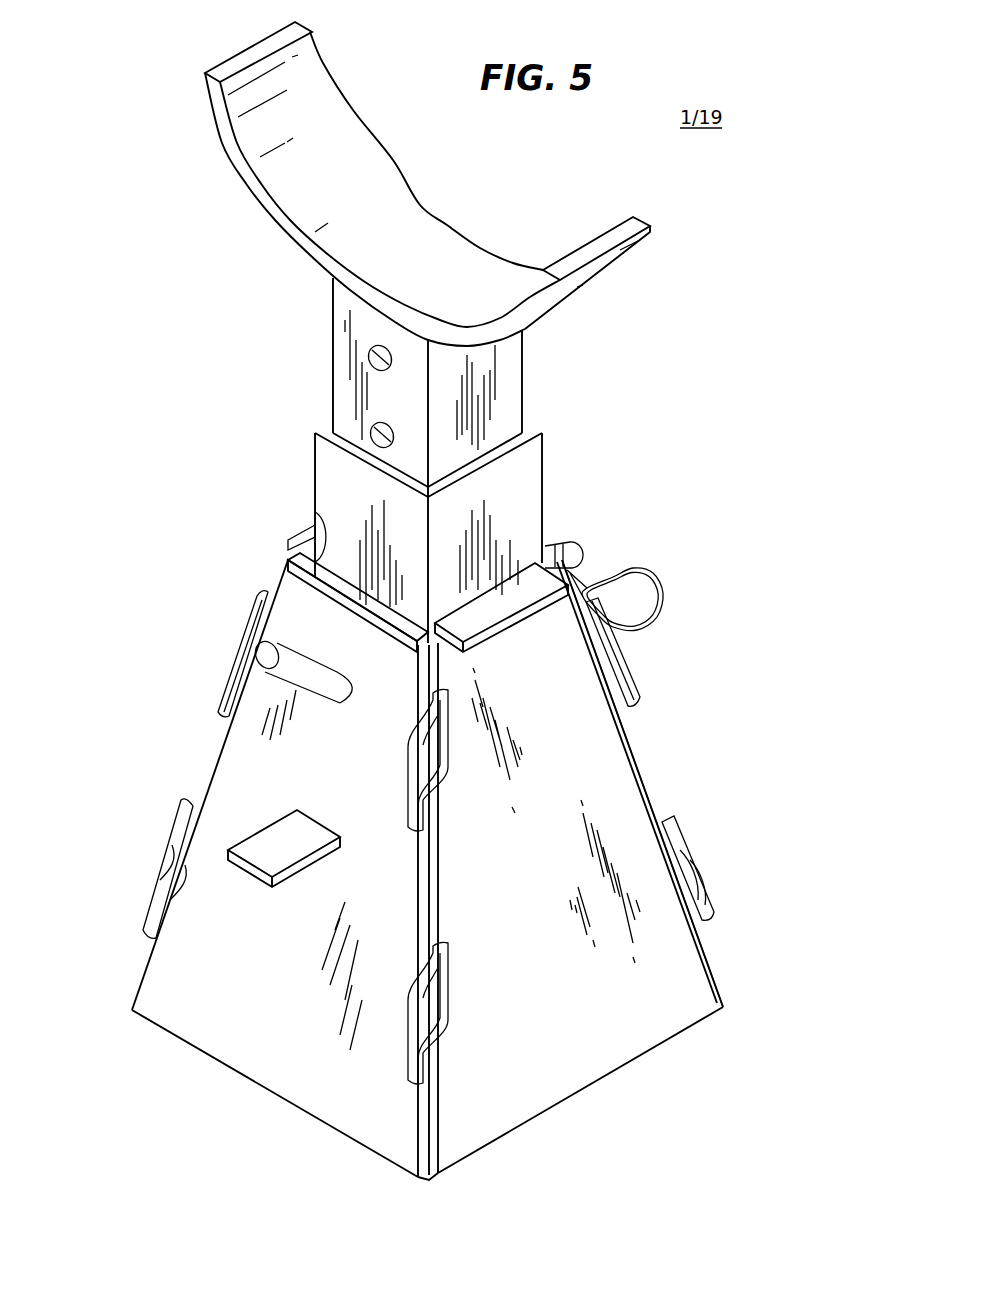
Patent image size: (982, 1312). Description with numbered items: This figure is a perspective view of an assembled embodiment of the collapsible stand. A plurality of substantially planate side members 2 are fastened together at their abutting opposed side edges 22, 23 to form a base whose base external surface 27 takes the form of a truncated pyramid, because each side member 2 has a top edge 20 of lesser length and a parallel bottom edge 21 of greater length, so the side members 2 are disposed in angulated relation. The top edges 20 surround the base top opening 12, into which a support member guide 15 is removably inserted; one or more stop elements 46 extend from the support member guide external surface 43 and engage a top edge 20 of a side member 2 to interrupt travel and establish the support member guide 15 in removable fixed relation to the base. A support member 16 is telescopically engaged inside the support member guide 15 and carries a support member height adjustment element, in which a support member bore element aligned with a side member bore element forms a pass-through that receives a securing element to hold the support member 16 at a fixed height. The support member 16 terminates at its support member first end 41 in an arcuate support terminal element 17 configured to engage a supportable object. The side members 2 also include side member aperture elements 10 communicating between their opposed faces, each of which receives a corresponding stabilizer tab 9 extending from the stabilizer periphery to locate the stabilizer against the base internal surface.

The side member 2 is at (432, 879).
The stabilizer tab 9 is at (287, 819).
The side member aperture element 10 is at (317, 817).
The base top opening 12 is at (328, 515).
The support member guide 15 is at (472, 547).
The support member 16 is at (404, 460).
The support terminal element 17 is at (426, 206).
The top edge 20 is at (303, 577).
The bottom edge 21 is at (283, 1100).
The side edge 22 is at (429, 907).
The side edge 23 is at (765, 926).
The base external surface 27 is at (327, 600).
The support member first end 41 is at (343, 300).
The support member guide external surface 43 is at (327, 463).
The stop element 46 is at (307, 533).